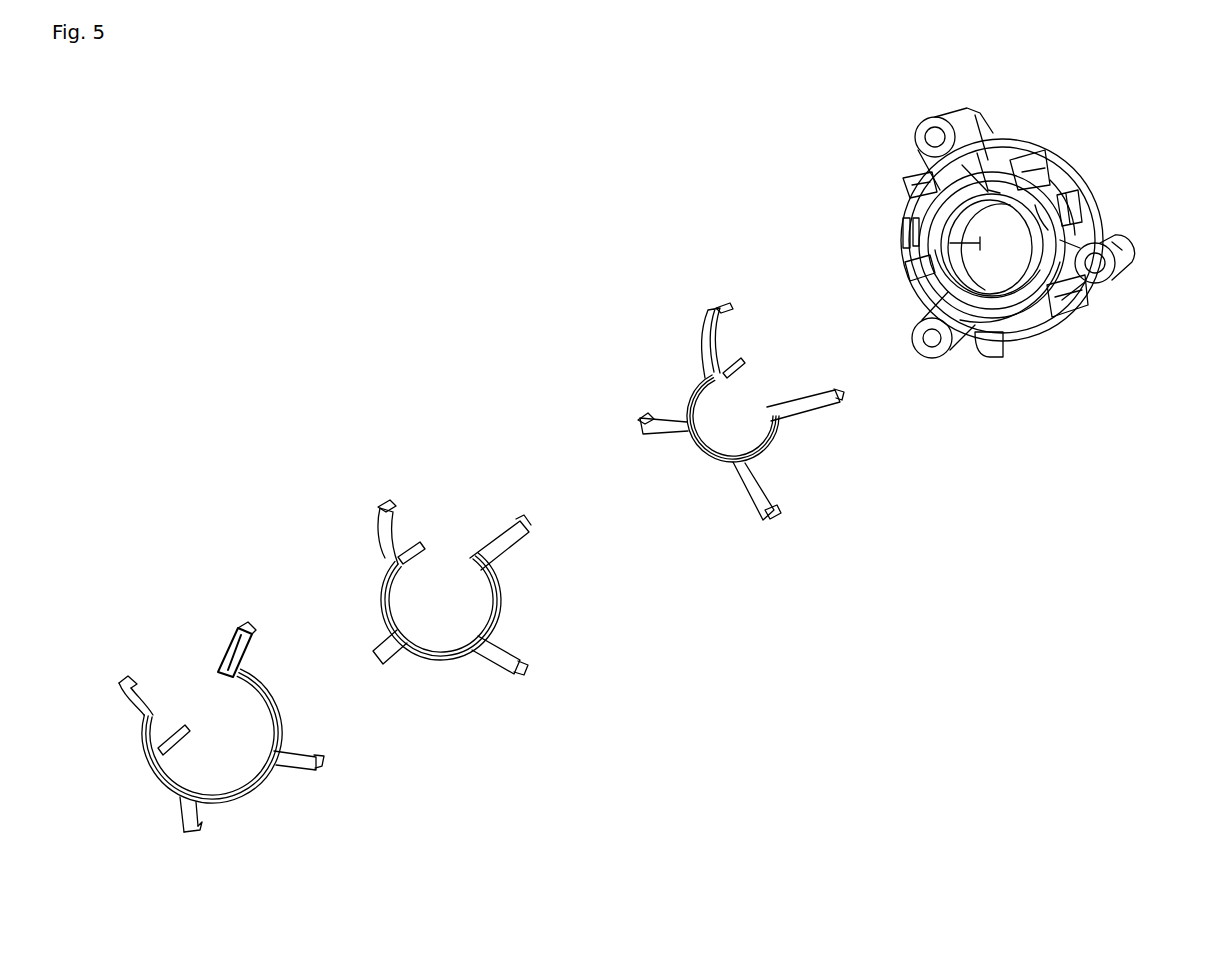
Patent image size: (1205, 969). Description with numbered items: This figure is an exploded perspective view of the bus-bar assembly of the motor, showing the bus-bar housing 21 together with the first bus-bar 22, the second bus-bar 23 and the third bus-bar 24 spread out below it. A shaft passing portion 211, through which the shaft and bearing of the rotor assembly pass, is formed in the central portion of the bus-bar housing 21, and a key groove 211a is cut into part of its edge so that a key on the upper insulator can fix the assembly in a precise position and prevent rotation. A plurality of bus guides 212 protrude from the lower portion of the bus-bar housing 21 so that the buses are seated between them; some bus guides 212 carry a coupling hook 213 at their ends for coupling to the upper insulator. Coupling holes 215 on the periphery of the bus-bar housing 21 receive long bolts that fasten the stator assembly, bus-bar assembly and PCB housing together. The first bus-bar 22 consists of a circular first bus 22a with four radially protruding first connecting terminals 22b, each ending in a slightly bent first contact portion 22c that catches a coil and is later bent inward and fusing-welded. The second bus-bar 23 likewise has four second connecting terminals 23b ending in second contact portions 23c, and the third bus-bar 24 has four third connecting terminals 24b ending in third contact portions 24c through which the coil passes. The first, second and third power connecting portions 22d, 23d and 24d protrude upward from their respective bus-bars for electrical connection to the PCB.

The bus-bar housing 21 is at (1083, 178).
The shaft passing portion 211 is at (912, 253).
The key groove 211a is at (950, 178).
The bus guide 212 is at (1040, 165).
The coupling hook 213 is at (905, 180).
The coupling hole 215 is at (1105, 268).
The first bus-bar 22 is at (648, 335).
The first bus 22a is at (705, 452).
The first connecting terminal 22b is at (640, 428).
The first contact portion 22c is at (715, 300).
The first power connecting portion 22d is at (745, 360).
The second bus-bar 23 is at (368, 466).
The second connecting terminal 23b is at (378, 525).
The second contact portion 23c is at (385, 502).
The second power connecting portion 23d is at (425, 543).
The third bus-bar 24 is at (168, 632).
The third connecting terminal 24b is at (218, 645).
The third contact portion 24c is at (250, 626).
The third power connecting portion 24d is at (172, 725).